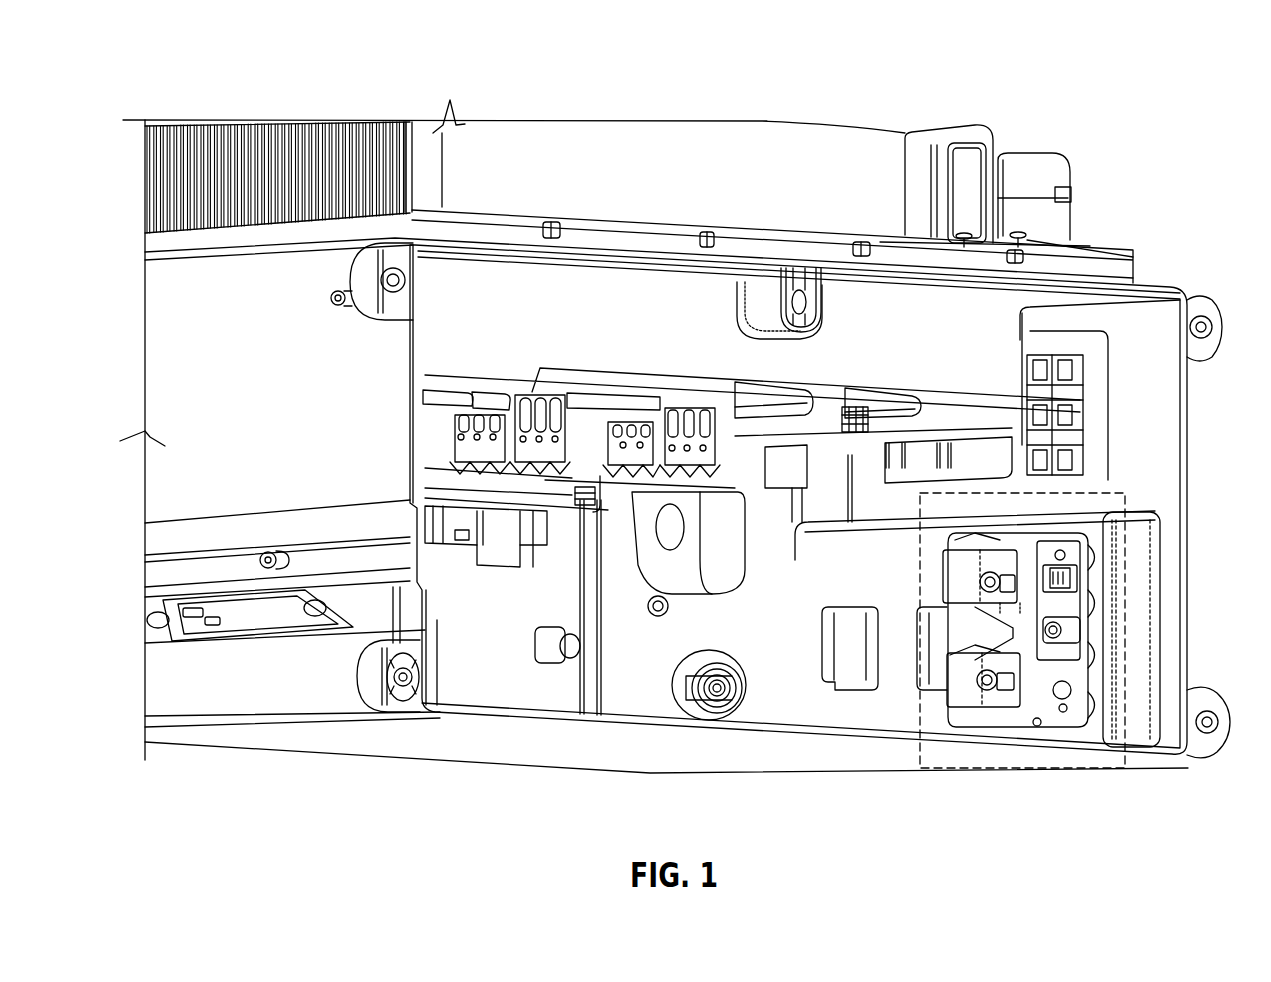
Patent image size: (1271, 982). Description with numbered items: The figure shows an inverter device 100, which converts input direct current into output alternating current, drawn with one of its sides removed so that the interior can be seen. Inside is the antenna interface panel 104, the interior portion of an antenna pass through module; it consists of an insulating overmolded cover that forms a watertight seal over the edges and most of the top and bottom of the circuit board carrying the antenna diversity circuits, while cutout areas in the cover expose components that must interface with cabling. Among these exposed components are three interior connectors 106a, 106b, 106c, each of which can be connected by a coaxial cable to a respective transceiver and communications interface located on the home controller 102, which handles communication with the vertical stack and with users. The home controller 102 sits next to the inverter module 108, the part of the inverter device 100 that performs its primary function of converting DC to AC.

The inverter device 100 is at (170, 70).
The home controller 102 is at (450, 546).
The antenna interface panel 104 is at (917, 553).
The interior connector 106a is at (979, 582).
The interior connector 106b is at (1062, 630).
The interior connector 106c is at (976, 681).
The inverter module 108 is at (550, 324).